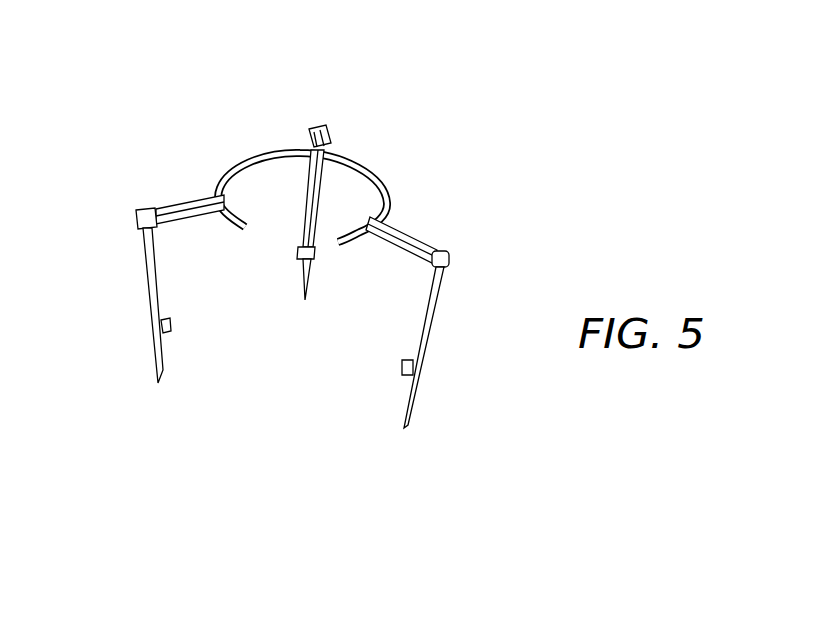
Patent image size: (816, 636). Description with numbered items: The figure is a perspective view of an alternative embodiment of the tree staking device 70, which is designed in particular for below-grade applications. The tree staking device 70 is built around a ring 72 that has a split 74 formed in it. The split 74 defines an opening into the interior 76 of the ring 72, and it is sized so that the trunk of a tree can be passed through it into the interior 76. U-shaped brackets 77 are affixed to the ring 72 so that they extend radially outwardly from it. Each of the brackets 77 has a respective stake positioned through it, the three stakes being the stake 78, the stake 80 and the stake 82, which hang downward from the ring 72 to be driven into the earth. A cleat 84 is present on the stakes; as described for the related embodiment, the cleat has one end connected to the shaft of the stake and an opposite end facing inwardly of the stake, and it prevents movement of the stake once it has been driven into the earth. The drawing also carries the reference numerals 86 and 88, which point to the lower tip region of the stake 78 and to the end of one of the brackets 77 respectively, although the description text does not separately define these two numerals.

The tree staking device 70 is at (422, 86).
The ring 72 is at (226, 92).
The split 74 is at (270, 243).
The interior of the ring 76 is at (287, 209).
The U-shaped brackets 77 is at (449, 206).
The stake 78 is at (150, 297).
The stake 80 is at (297, 280).
The stake 82 is at (438, 300).
The cleat 84 is at (218, 426).
The leg tip 86 is at (208, 494).
The cap on arm 88 is at (136, 213).